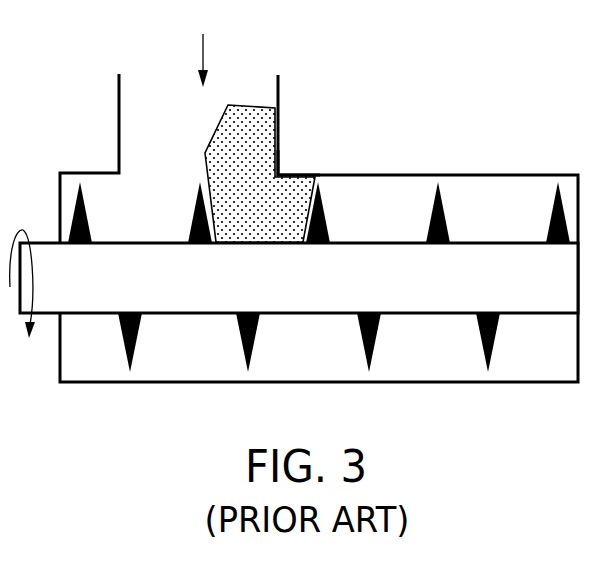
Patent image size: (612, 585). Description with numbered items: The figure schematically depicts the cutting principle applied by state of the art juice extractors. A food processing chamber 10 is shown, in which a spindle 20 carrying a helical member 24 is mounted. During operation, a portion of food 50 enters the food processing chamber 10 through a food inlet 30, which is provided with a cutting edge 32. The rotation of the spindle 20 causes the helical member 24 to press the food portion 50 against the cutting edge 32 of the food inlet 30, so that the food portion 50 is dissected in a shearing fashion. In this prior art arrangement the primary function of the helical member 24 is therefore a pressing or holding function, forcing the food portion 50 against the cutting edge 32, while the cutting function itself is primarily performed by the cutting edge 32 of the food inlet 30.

The food processing chamber 10 is at (532, 365).
The spindle 20 is at (41, 253).
The helical member 24 is at (123, 350).
The food inlet 30 is at (208, 50).
The cutting edge 32 is at (279, 172).
The food portion 50 is at (262, 113).